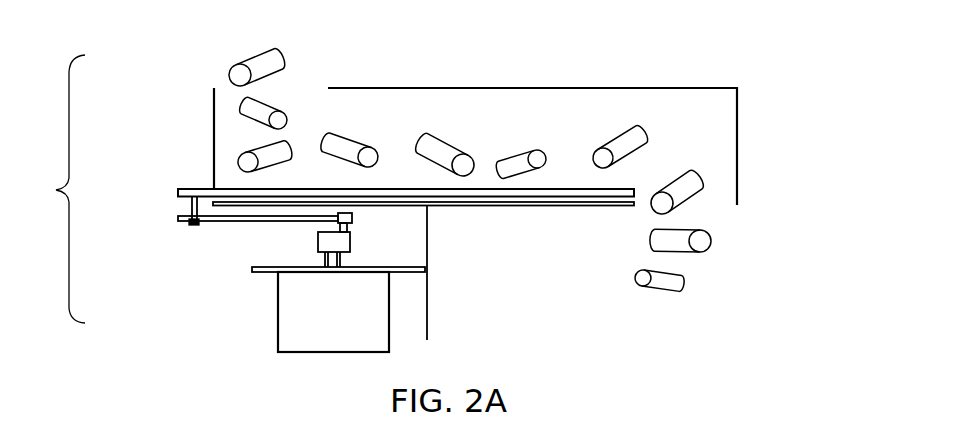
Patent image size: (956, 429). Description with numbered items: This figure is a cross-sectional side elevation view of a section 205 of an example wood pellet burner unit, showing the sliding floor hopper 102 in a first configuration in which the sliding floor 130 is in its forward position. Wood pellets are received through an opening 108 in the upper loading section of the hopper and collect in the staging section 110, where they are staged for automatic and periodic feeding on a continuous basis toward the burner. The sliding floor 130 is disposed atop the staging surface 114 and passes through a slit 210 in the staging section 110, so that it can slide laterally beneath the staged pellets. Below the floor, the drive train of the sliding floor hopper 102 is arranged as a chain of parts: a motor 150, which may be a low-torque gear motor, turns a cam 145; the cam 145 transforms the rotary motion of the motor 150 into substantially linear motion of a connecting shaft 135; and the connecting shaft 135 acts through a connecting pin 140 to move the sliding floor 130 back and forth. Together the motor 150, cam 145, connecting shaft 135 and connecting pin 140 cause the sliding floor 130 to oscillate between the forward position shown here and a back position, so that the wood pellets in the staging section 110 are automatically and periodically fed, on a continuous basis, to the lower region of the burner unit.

The sliding floor hopper 102 is at (51, 189).
The opening 108 is at (210, 45).
The staging section 110 is at (513, 88).
The staging surface 114 is at (638, 204).
The sliding floor 130 is at (470, 196).
The connecting shaft 135 is at (252, 223).
The connecting pin 140 is at (189, 210).
The cam 145 is at (350, 242).
The motor 150 is at (277, 320).
The section 205 is at (787, 83).
The slit 210 is at (203, 172).